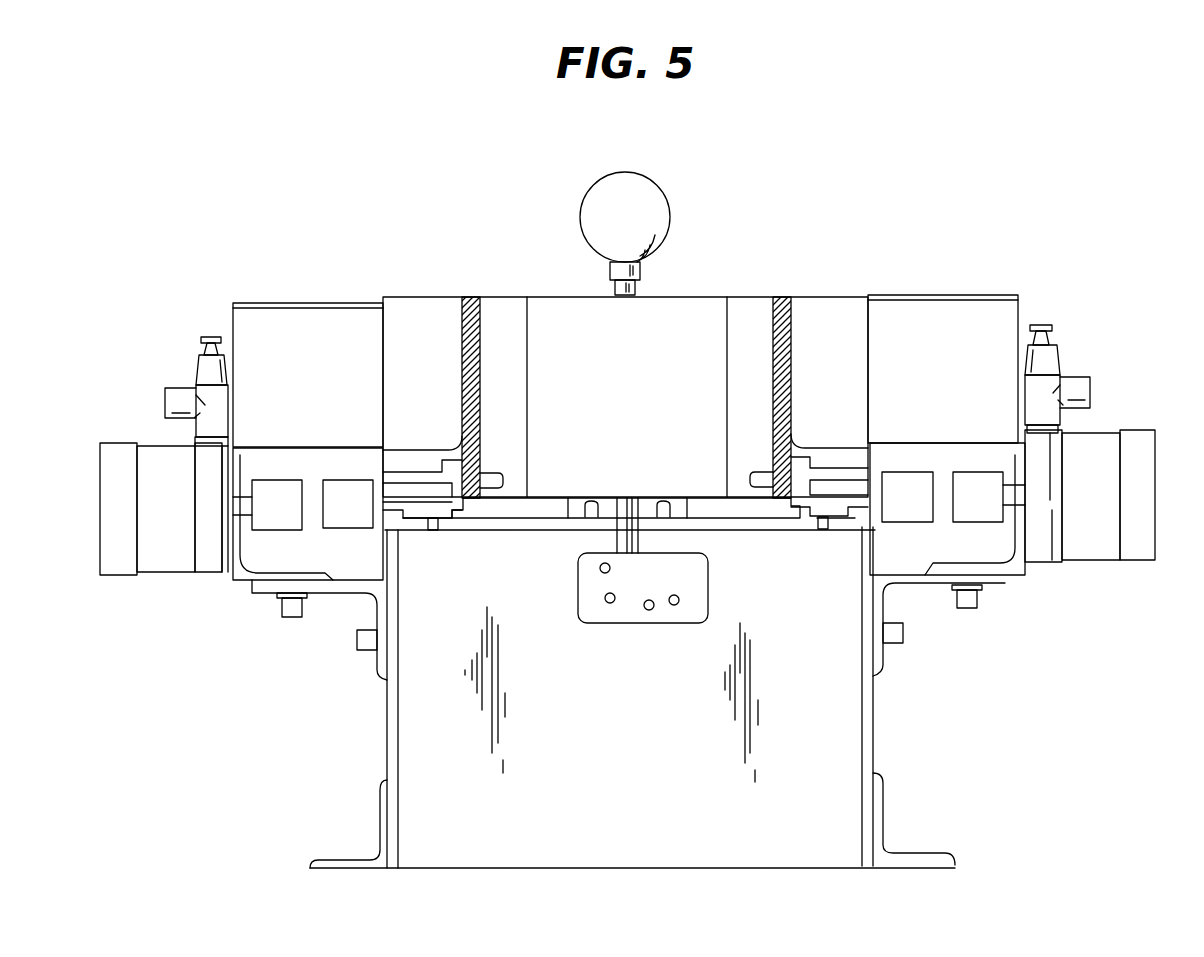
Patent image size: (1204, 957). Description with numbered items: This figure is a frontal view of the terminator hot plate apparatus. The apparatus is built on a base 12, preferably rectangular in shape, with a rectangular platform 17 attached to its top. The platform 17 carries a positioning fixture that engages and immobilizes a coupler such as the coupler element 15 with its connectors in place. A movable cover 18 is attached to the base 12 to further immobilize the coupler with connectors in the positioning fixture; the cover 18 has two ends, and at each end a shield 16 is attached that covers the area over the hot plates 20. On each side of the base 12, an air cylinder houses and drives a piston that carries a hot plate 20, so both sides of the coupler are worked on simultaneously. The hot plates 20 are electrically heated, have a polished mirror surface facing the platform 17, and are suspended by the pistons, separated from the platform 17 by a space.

The base 12 is at (873, 728).
The coupler element 15 is at (556, 509).
The shield 16 is at (959, 294).
The platform 17 is at (508, 522).
The movable cover 18 is at (543, 296).
The hot plate 20 is at (280, 530).